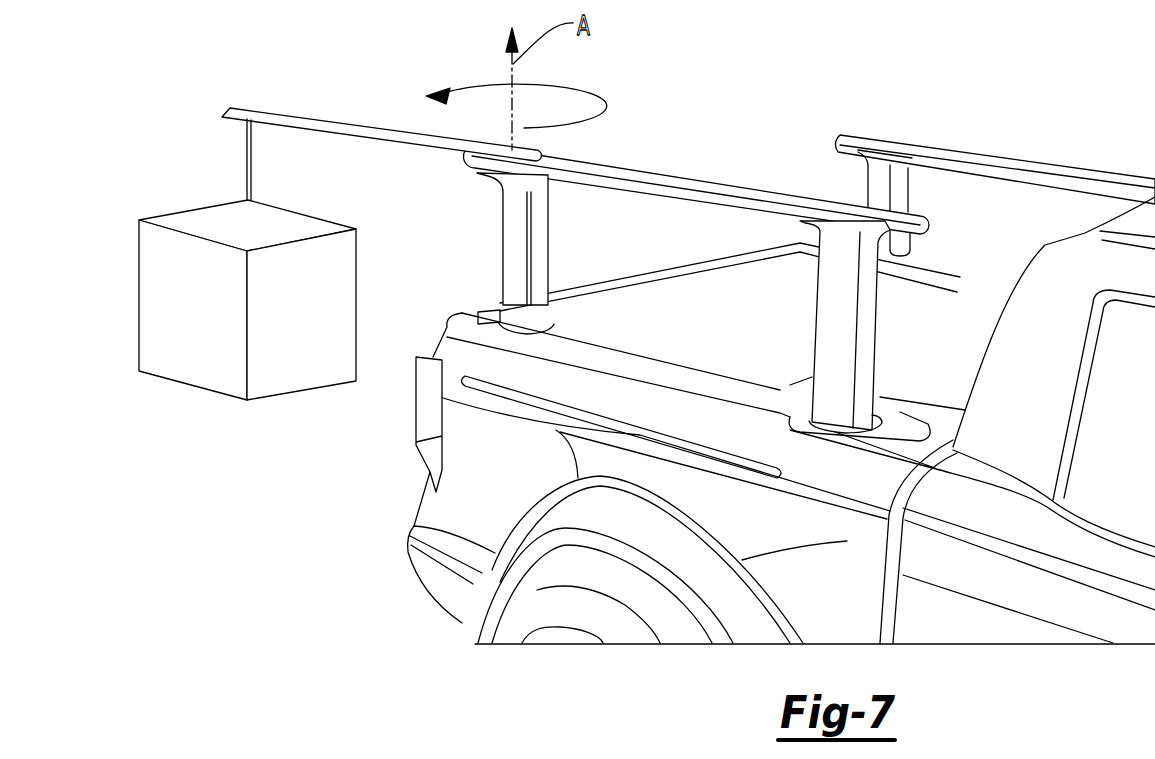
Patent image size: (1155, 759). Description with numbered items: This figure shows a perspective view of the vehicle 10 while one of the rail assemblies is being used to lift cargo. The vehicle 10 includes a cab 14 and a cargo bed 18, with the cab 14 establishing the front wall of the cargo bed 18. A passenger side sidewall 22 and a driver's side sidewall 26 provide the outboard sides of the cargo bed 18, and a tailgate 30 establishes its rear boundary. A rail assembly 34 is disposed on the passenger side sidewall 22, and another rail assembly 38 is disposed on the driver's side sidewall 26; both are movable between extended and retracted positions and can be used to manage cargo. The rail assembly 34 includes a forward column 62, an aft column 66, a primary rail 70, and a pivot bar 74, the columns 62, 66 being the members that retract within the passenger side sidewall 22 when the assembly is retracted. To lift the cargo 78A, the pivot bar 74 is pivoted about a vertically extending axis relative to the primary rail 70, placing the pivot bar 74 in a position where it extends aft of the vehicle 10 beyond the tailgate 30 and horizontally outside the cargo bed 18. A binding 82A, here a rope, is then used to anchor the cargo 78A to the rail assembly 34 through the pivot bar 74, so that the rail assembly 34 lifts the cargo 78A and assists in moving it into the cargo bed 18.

The vehicle 10 is at (1030, 587).
The cab 14 is at (941, 620).
The cargo bed 18 is at (470, 493).
The passenger side sidewall 22 is at (850, 540).
The driver's side sidewall 26 is at (953, 300).
The tailgate 30 is at (737, 295).
The rail assembly 34 is at (840, 318).
The rail assembly 38 is at (1053, 175).
The forward column 62 is at (845, 378).
The aft column 66 is at (515, 304).
The primary rail 70 is at (788, 194).
The pivot bar 74 is at (325, 122).
The cargo 78A is at (162, 317).
The binding 82A is at (248, 163).